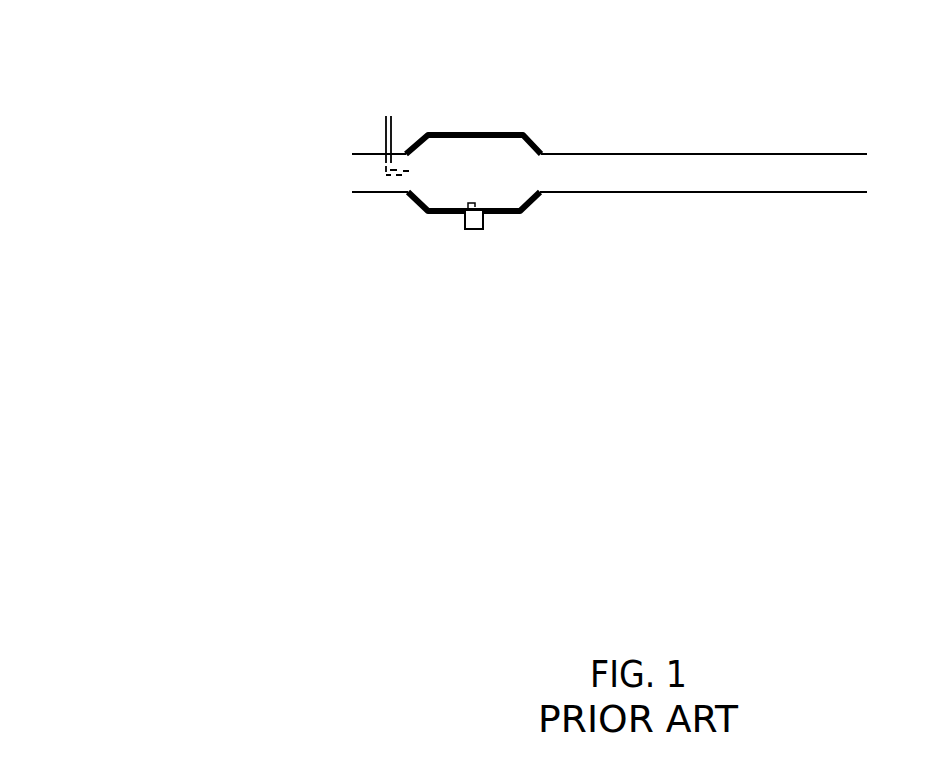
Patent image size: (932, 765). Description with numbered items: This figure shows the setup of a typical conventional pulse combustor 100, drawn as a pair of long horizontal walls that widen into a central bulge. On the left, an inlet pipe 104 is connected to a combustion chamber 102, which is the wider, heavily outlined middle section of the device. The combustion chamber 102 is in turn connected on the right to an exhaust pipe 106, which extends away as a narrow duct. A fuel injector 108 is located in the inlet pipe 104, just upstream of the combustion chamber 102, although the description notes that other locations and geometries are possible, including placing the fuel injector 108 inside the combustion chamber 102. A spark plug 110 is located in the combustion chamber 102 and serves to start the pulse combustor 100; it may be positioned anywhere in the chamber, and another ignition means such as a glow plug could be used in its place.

The pulse combustor 100 is at (479, 167).
The combustion chamber 102 is at (520, 210).
The inlet pipe 104 is at (370, 193).
The exhaust pipe 106 is at (798, 192).
The fuel injector 108 is at (386, 133).
The spark plug 110 is at (465, 221).